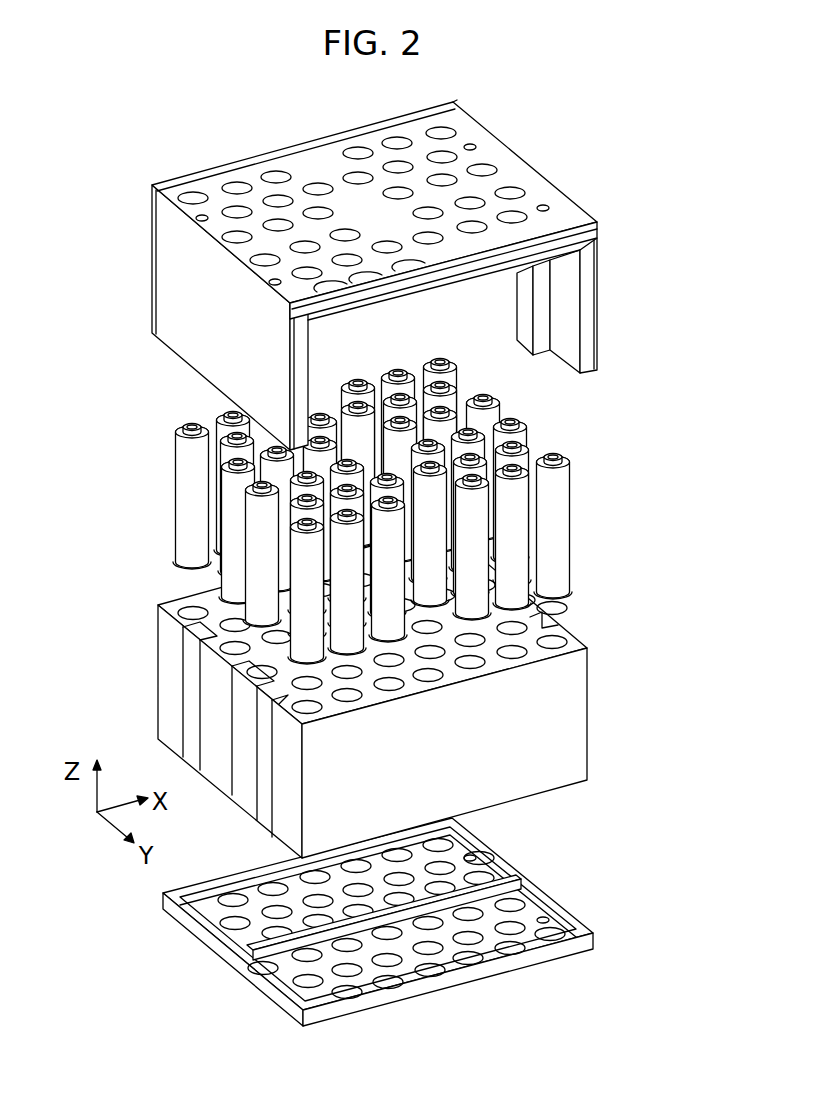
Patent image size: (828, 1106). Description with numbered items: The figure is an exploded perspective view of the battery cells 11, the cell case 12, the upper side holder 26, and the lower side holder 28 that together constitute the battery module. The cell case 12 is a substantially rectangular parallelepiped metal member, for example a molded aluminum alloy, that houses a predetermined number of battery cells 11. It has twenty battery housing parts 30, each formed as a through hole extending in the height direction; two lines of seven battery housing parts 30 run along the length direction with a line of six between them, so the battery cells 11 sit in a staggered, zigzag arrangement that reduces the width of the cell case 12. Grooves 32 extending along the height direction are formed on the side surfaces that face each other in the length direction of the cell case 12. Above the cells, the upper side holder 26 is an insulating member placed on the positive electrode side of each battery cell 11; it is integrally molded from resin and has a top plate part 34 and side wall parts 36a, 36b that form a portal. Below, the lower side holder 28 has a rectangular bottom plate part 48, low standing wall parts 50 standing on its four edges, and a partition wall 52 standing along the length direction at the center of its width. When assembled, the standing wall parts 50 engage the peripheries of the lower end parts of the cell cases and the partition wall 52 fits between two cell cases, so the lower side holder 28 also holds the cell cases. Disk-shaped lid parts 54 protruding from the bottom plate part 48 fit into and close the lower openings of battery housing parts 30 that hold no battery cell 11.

The battery cell 11 is at (502, 412).
The cell case 12 is at (369, 692).
The upper side holder 26 is at (375, 267).
The lower side holder 28 is at (391, 945).
The battery housing part 30 is at (190, 606).
The groove 32 is at (553, 616).
The top plate part 34 is at (318, 160).
The side wall part 36a is at (190, 303).
The side wall part 36b is at (600, 293).
The bottom plate part 48 is at (372, 948).
The standing wall part 50 is at (490, 848).
The partition wall 52 is at (262, 972).
The lid part 54 is at (357, 915).